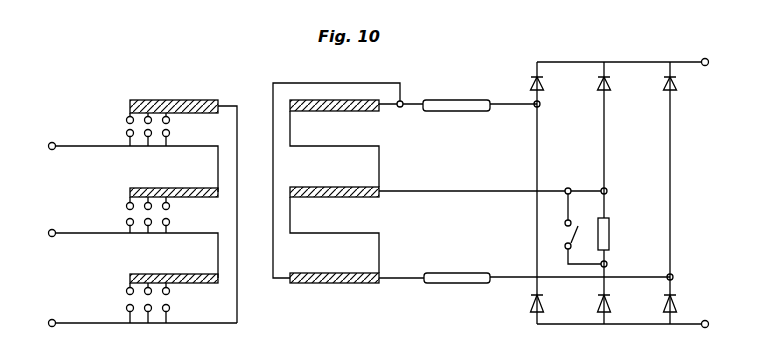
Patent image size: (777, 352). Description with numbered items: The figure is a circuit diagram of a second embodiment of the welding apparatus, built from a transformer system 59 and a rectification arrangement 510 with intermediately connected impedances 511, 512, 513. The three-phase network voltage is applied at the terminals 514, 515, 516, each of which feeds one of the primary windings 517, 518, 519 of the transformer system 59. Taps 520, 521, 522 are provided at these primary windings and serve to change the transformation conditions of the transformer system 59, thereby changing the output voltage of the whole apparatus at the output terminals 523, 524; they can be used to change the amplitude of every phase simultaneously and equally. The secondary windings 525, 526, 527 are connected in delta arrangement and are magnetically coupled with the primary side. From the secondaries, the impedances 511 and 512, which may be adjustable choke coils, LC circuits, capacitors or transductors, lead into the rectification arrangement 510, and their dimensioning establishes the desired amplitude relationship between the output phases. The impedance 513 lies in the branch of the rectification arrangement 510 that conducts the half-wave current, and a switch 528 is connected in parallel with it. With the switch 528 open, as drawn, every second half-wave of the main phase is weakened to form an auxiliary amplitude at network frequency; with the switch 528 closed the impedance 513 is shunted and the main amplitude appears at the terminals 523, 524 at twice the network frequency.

The transformer system 59 is at (260, 78).
The rectification arrangement 510 is at (627, 42).
The impedance 511 is at (480, 94).
The impedance 512 is at (524, 267).
The impedance 513 is at (622, 234).
The terminal 514 is at (113, 164).
The terminal 515 is at (113, 251).
The terminal 516 is at (122, 323).
The primary winding 517 is at (174, 96).
The primary winding 518 is at (174, 182).
The primary winding 519 is at (174, 268).
The tap 520 is at (127, 129).
The tap 521 is at (130, 215).
The tap 522 is at (131, 303).
The terminal 523 is at (641, 62).
The terminal 524 is at (641, 324).
The secondary winding 525 is at (334, 116).
The secondary winding 526 is at (334, 203).
The secondary winding 527 is at (334, 290).
The switch 528 is at (562, 236).